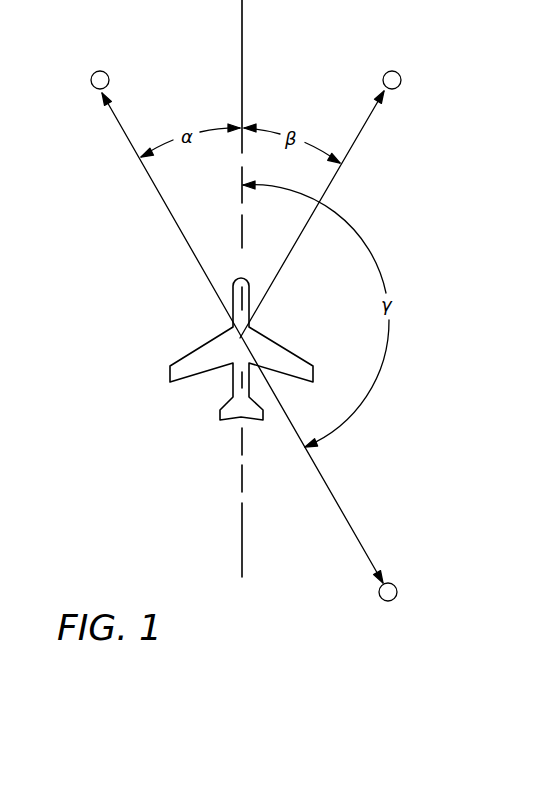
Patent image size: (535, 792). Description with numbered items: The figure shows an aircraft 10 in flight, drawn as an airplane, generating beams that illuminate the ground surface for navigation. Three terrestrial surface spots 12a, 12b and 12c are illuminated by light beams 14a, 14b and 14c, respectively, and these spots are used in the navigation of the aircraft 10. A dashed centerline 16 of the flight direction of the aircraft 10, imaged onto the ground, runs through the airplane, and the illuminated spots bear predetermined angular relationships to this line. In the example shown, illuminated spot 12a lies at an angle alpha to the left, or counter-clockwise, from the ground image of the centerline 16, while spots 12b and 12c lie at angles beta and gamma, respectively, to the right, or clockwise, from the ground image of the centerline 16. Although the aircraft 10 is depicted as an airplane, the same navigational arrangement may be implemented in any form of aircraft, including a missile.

The aircraft 10 is at (237, 379).
The terrestrial surface spot 12a is at (95, 72).
The terrestrial surface spot 12b is at (398, 72).
The terrestrial surface spot 12c is at (393, 600).
The light beam 14a is at (172, 221).
The light beam 14b is at (333, 180).
The light beam 14c is at (349, 523).
The centerline of flight direction 16 is at (243, 33).